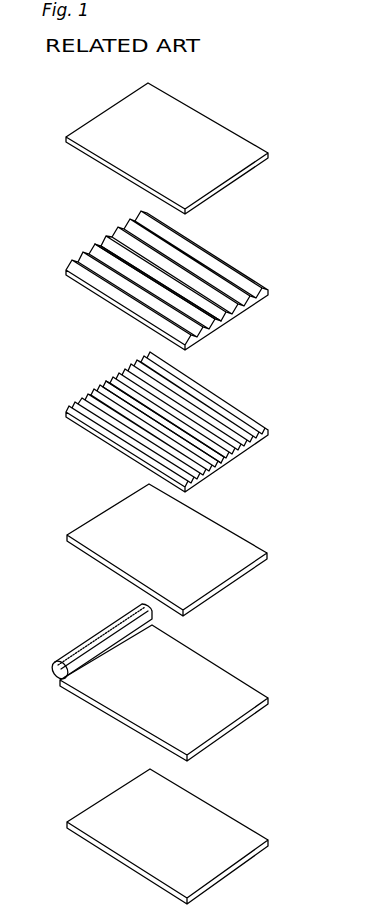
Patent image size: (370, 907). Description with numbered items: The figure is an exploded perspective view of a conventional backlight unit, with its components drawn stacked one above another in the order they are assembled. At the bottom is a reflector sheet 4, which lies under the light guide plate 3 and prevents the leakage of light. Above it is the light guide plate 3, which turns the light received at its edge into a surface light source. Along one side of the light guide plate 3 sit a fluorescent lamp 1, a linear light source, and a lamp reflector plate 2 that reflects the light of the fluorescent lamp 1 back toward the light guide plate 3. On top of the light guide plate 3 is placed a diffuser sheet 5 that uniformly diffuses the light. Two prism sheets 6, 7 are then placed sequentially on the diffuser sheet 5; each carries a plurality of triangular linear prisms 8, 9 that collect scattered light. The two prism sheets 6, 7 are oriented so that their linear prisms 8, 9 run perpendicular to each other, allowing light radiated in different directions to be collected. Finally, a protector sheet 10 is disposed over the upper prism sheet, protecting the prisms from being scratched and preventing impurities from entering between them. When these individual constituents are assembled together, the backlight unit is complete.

The fluorescent lamp 1 is at (60, 678).
The lamp reflector plate 2 is at (73, 650).
The light guide plate 3 is at (227, 713).
The reflector sheet 4 is at (238, 823).
The diffuser sheet 5 is at (230, 568).
The prism sheet 6 is at (242, 453).
The prism sheet 7 is at (240, 307).
The triangular linear prisms 8 is at (107, 390).
The triangular linear prisms 9 is at (93, 245).
The protector sheet 10 is at (237, 180).